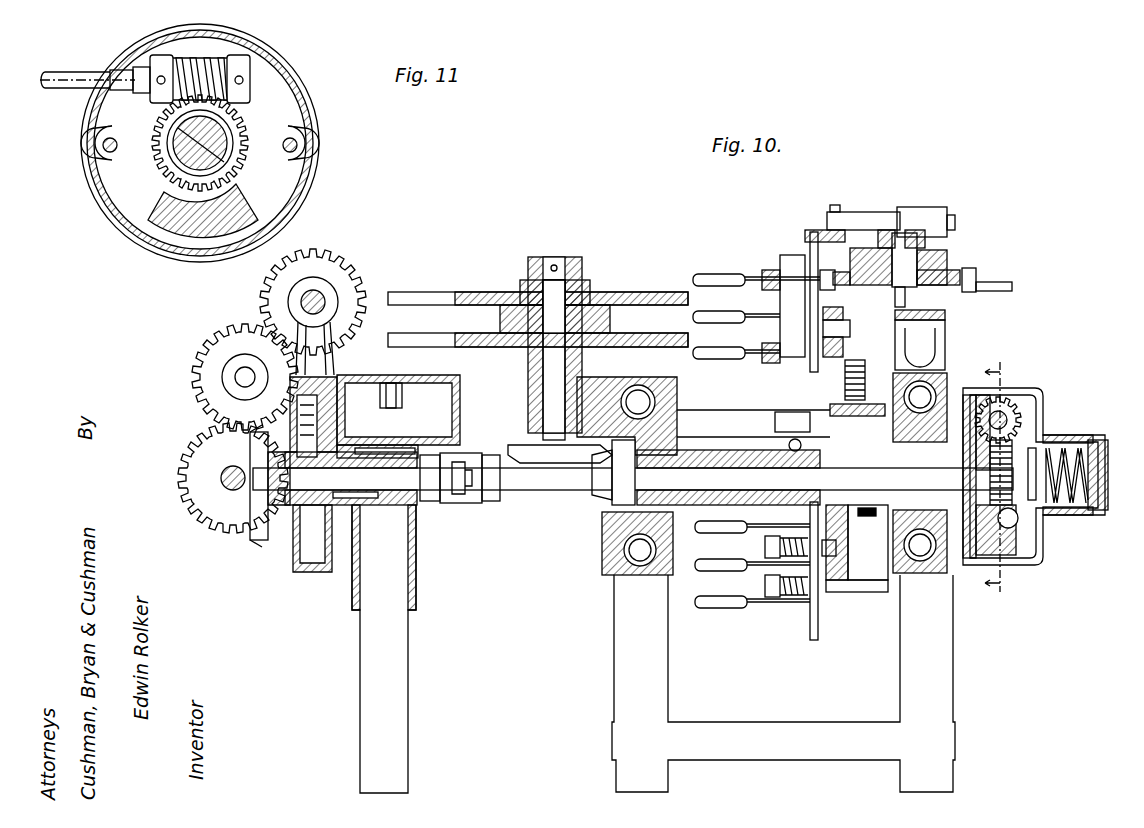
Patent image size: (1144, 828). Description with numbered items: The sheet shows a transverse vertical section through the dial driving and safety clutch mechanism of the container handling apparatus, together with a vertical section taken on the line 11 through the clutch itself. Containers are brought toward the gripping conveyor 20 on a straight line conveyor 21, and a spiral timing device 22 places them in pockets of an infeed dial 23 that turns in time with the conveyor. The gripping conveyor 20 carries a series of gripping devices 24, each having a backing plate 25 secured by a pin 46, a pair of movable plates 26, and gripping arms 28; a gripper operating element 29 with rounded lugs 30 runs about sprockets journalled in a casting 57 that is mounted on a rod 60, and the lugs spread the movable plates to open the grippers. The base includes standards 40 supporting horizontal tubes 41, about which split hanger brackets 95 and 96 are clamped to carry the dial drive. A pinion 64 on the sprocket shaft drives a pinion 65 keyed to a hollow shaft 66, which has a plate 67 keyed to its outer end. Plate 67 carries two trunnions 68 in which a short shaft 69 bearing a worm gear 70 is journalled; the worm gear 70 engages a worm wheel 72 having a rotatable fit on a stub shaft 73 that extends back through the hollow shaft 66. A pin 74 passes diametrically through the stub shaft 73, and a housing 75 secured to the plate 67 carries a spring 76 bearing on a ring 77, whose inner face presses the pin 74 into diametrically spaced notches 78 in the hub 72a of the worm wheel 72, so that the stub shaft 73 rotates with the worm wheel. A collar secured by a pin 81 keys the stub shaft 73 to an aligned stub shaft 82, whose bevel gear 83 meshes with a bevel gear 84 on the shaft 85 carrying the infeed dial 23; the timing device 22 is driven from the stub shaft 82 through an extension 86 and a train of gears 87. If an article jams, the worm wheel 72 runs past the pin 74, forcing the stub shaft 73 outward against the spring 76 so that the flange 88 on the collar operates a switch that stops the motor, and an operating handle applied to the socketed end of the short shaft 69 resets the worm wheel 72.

In FIG. 10, the section line 11— 11 is at (1023, 478).
In FIG. 10, the gripping conveyor 20 is at (846, 572).
In FIG. 10, the straight line conveyor 21 is at (378, 375).
In FIG. 10, the timing device 22 is at (345, 262).
In FIG. 10, the infeed dial 23 is at (538, 348).
In FIG. 10, the gripping device 24 is at (785, 622).
In FIG. 10, the backing plate 25 is at (812, 250).
In FIG. 10, the movable plate 26 is at (788, 256).
In FIG. 10, the gripping arm 28 is at (684, 259).
In FIG. 10, the gripper operating element 29 is at (983, 262).
In FIG. 10, the lug 30 is at (1000, 284).
In FIG. 10, the standard 40 is at (398, 668).
In FIG. 10, the tube 41 is at (640, 550).
In FIG. 10, the pin or stud 46 is at (818, 230).
In FIG. 10, the casting 57 is at (930, 262).
In FIG. 10, the rod 60 is at (808, 505).
In FIG. 10, the pinion 64 is at (856, 362).
In FIG. 10, the pinion 65 is at (868, 516).
In FIG. 10, the sleeve or hollow shaft element 66 is at (631, 498).
In FIG. 11, the plate 67 is at (110, 170).
In FIG. 10, the plate 67 is at (975, 388).
In FIG. 11, the trunnion 68 is at (240, 60).
In FIG. 11, the short shaft 69 is at (250, 80).
In FIG. 10, the short shaft 69 is at (1012, 412).
In FIG. 11, the worm gear 70 is at (215, 52).
In FIG. 10, the worm gear 70 is at (1027, 392).
In FIG. 11, the worm wheel 72 is at (248, 130).
In FIG. 10, the worm wheel 72 is at (1040, 430).
In FIG. 11, the hub 72a is at (184, 168).
In FIG. 10, the hub 72a is at (1012, 556).
In FIG. 11, the stub shaft 73 is at (188, 138).
In FIG. 10, the stub shaft 73 is at (942, 473).
In FIG. 10, the pin 74 is at (1048, 450).
In FIG. 11, the housing 75 is at (300, 198).
In FIG. 10, the housing 75 is at (1040, 540).
In FIG. 10, the spring 76 is at (1095, 505).
In FIG. 10, the ring 77 is at (1036, 495).
In FIG. 10, the notch 78 is at (992, 470).
In FIG. 10, the pin 81 is at (828, 479).
In FIG. 10, the stub shaft 82 is at (625, 492).
In FIG. 10, the bevel gear 83 is at (600, 492).
In FIG. 10, the bevel gear 84 is at (520, 446).
In FIG. 10, the shaft 85 is at (560, 275).
In FIG. 10, the extension 86 is at (428, 490).
In FIG. 10, the train of gears 87 is at (205, 345).
In FIG. 10, the flange 88 is at (776, 420).
In FIG. 10, the split hanger bracket 95 is at (950, 570).
In FIG. 10, the split hanger bracket 96 is at (606, 560).